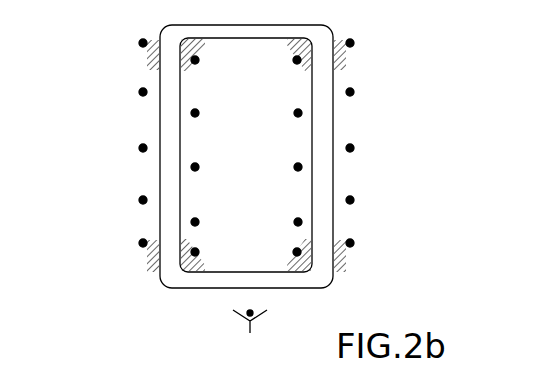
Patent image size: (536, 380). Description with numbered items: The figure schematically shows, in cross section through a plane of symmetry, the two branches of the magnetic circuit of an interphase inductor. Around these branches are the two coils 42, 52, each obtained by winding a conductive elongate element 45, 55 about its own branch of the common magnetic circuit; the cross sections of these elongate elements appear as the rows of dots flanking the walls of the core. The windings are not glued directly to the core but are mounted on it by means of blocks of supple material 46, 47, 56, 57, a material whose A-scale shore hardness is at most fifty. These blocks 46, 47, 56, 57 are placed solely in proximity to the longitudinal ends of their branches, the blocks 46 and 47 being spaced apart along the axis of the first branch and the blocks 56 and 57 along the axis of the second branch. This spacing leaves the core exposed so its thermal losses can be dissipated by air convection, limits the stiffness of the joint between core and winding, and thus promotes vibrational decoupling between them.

The coil 42 is at (92, 167).
The coil 52 is at (432, 157).
The conductive elongate element 45 is at (139, 148).
The block of supple material 46 is at (150, 55).
The block of supple material 47 is at (150, 268).
The conductive elongate element 55 is at (353, 148).
The block of supple material 56 is at (350, 68).
The block of supple material 57 is at (348, 268).